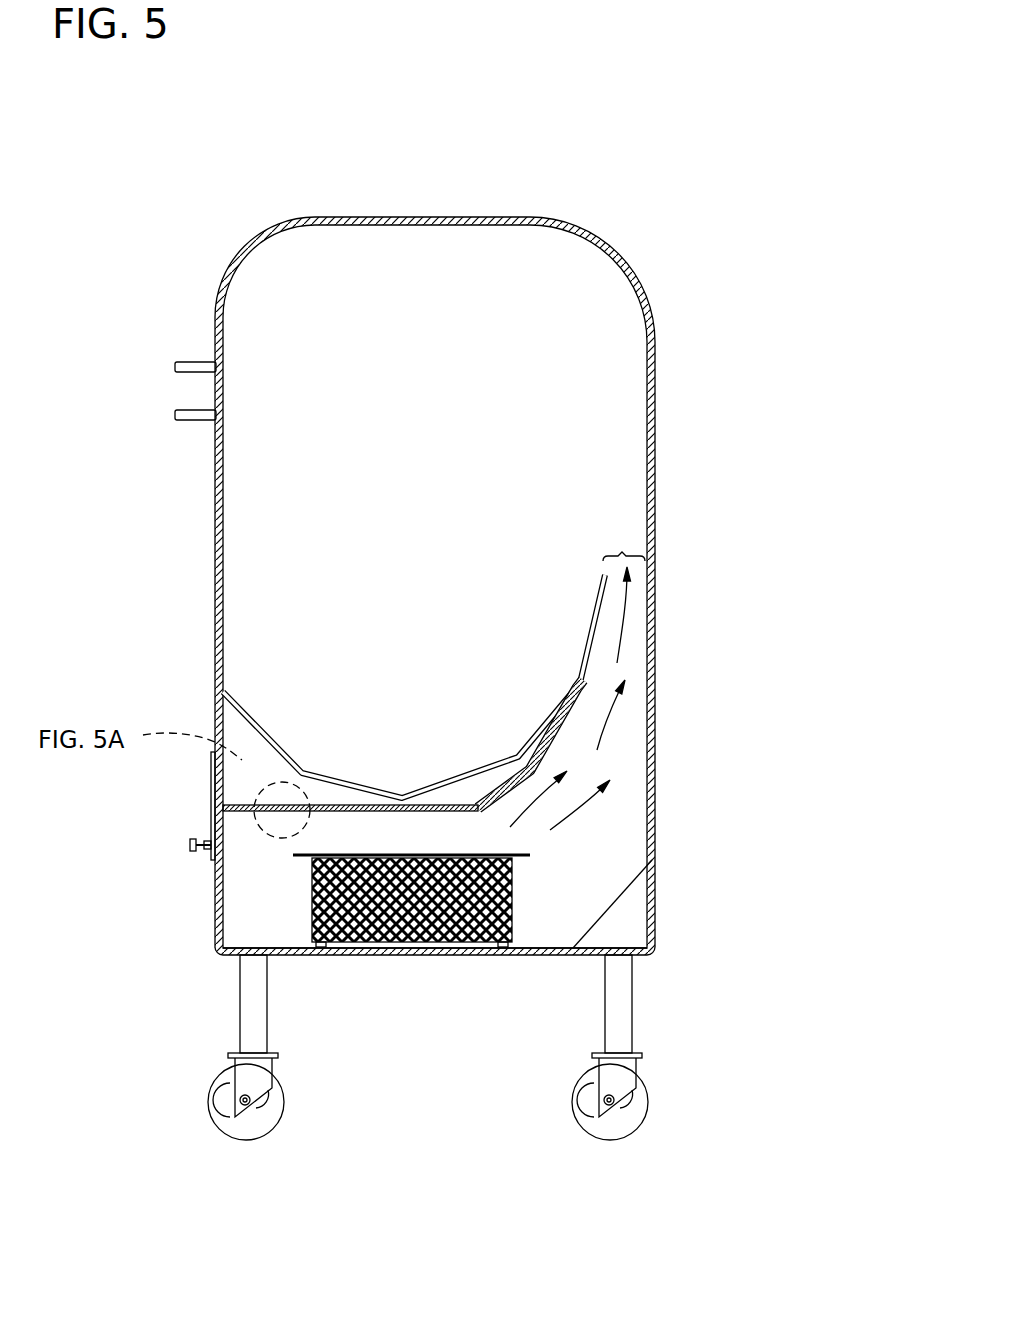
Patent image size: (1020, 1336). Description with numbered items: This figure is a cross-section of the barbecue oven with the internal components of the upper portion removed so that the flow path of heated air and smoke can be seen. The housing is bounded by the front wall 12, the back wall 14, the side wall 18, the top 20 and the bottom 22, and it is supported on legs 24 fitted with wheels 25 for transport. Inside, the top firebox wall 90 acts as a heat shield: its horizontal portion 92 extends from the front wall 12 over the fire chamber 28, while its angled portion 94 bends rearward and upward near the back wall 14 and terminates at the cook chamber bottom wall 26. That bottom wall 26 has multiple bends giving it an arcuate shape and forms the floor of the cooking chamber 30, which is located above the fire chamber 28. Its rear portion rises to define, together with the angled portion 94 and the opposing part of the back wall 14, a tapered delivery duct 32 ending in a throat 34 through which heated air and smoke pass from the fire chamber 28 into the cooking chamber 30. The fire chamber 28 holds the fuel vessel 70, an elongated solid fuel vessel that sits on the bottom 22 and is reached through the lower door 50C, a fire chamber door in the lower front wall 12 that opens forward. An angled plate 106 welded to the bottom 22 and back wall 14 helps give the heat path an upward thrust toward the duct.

The front wall 12 is at (215, 703).
The back wall 14 is at (655, 650).
The side wall 18 is at (598, 300).
The top 20 is at (435, 218).
The bottom 22 is at (390, 950).
The legs 24 is at (250, 1022).
The wheels 25 is at (240, 1130).
The cook chamber bottom wall 26 is at (252, 716).
The fire chamber 28 is at (272, 896).
The cooking chamber 30 is at (302, 600).
The delivery duct 32 is at (640, 670).
The throat 34 is at (622, 552).
The lower door 50C is at (212, 817).
The fuel vessel 70 is at (524, 933).
The top firebox wall 90 is at (565, 757).
The horizontal portion 92 is at (403, 810).
The angled portion 94 is at (527, 780).
The angled plate 106 is at (627, 896).